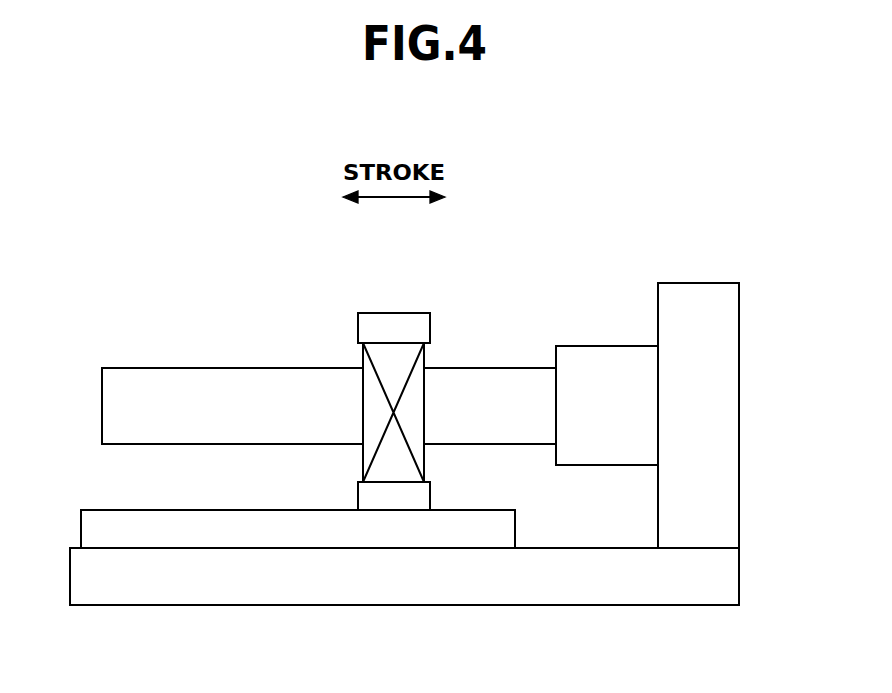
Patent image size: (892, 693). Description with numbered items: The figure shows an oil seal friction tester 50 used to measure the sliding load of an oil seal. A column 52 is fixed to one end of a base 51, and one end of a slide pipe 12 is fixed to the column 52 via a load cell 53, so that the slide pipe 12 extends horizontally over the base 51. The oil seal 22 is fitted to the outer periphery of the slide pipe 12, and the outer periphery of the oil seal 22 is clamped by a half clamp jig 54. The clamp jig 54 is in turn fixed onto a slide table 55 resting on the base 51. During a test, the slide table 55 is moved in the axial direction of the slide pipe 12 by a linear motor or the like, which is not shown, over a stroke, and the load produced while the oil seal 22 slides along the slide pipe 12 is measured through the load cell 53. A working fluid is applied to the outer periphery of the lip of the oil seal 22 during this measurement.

The oil seal friction tester 50 is at (192, 312).
The slide pipe 12 is at (130, 367).
The oil seal 22 is at (375, 403).
The half clamp jig 54 is at (393, 313).
The load cell 53 is at (607, 352).
The column 52 is at (731, 397).
The slide table 55 is at (183, 519).
The base 51 is at (424, 606).